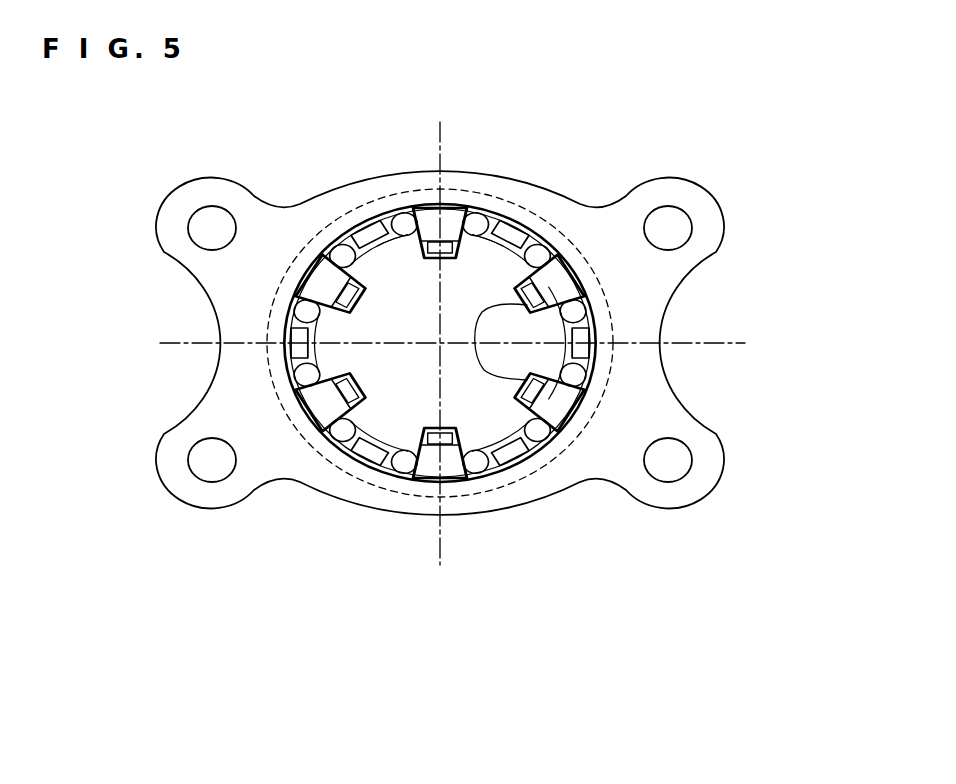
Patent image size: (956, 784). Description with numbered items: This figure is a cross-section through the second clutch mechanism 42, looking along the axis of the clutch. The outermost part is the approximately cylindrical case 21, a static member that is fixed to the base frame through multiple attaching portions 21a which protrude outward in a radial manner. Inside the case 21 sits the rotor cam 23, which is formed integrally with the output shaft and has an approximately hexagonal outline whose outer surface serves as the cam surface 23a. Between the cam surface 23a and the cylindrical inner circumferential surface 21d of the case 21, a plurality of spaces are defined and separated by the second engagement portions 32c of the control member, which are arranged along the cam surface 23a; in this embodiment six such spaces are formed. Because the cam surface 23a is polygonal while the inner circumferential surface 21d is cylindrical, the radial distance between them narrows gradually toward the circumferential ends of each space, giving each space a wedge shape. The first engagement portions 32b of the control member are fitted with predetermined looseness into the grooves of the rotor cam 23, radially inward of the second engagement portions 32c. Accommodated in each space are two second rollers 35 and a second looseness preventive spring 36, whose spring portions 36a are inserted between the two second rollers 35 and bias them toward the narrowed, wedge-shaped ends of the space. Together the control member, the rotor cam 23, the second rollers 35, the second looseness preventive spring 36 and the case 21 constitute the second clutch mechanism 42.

The case 21 is at (492, 174).
The attaching portions 21a is at (169, 205).
The inner circumferential surface 21d is at (541, 203).
The rotor cam 23 is at (362, 218).
The cam surface 23a is at (400, 234).
The first engagement portions 32b is at (492, 342).
The second engagement portions 32c is at (594, 336).
The second rollers 35 is at (584, 306).
The second looseness preventive spring 36 is at (300, 291).
The spring portions 36a is at (578, 279).
The second clutch mechanism 42 is at (537, 162).